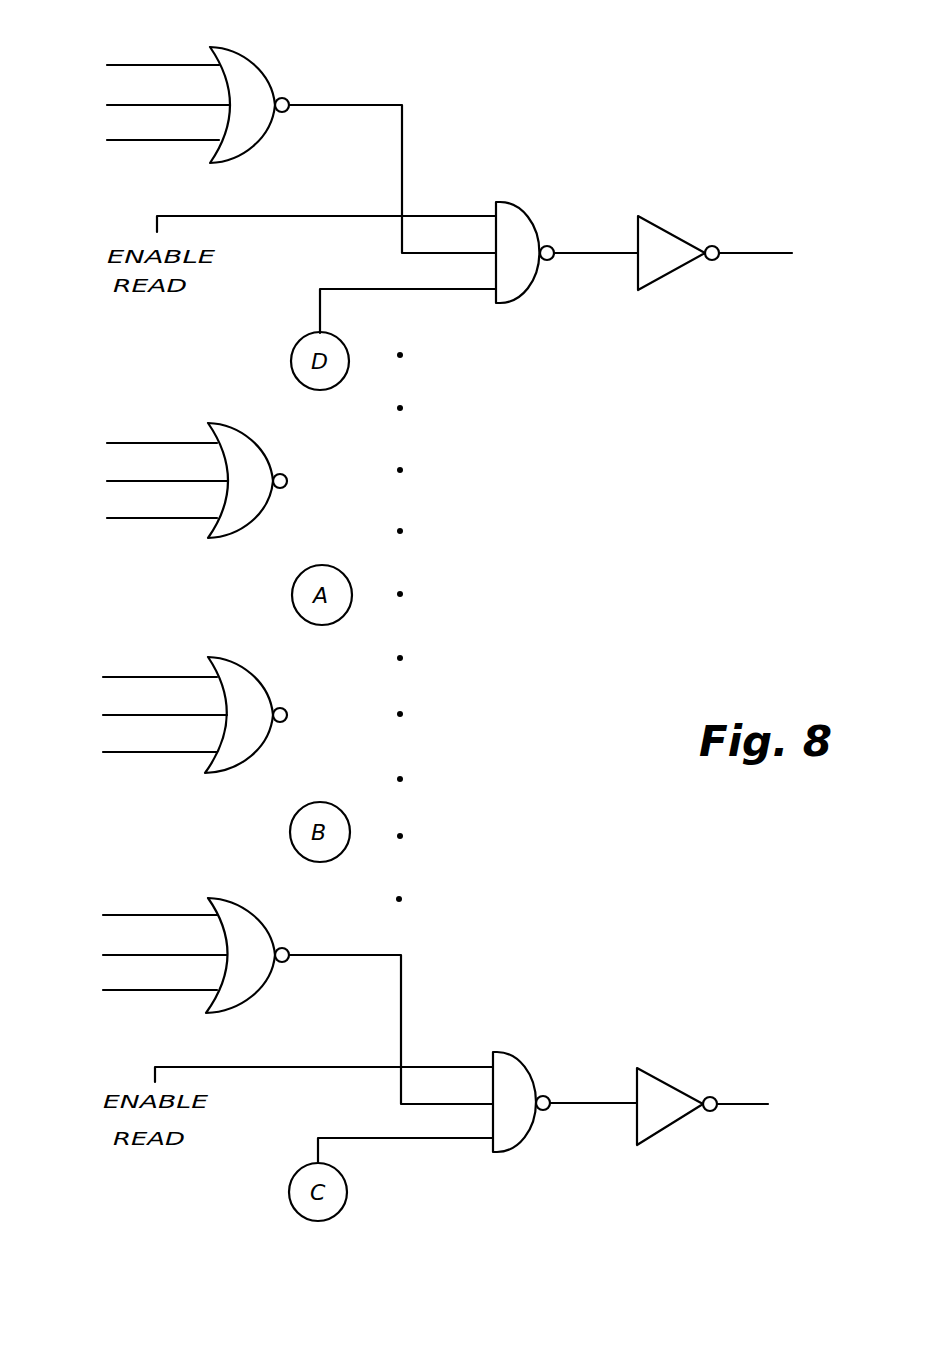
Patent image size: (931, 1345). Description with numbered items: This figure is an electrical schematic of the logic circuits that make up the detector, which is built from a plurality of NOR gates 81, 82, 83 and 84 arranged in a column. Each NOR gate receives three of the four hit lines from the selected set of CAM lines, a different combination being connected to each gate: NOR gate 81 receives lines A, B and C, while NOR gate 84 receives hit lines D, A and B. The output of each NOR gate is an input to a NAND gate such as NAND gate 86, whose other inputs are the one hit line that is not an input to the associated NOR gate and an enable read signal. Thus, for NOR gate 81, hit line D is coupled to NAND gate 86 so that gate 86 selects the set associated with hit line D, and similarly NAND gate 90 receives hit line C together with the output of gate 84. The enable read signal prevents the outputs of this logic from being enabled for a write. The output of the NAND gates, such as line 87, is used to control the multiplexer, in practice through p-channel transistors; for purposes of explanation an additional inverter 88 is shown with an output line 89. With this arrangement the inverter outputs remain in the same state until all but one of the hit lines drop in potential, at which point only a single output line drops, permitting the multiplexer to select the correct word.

The NOR gate 81 is at (250, 65).
The NOR gate 82 is at (257, 452).
The NOR gate 83 is at (260, 692).
The NOR gate 84 is at (263, 923).
The NAND gate 86 is at (522, 283).
The line 87 is at (583, 252).
The inverter 88 is at (658, 227).
The output line 89 is at (770, 252).
The NAND gate 90 is at (508, 1070).